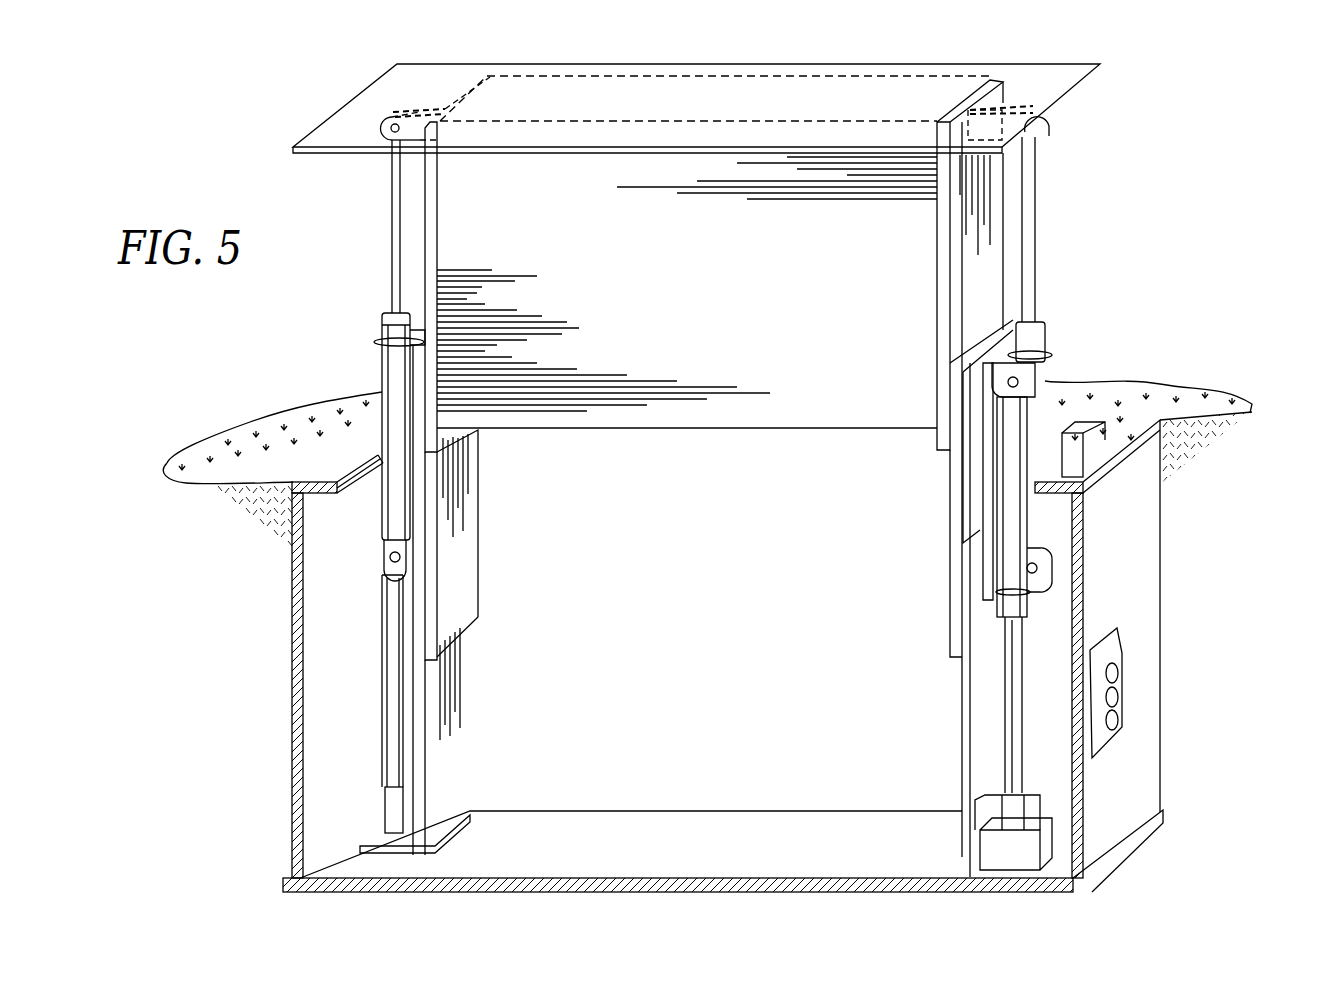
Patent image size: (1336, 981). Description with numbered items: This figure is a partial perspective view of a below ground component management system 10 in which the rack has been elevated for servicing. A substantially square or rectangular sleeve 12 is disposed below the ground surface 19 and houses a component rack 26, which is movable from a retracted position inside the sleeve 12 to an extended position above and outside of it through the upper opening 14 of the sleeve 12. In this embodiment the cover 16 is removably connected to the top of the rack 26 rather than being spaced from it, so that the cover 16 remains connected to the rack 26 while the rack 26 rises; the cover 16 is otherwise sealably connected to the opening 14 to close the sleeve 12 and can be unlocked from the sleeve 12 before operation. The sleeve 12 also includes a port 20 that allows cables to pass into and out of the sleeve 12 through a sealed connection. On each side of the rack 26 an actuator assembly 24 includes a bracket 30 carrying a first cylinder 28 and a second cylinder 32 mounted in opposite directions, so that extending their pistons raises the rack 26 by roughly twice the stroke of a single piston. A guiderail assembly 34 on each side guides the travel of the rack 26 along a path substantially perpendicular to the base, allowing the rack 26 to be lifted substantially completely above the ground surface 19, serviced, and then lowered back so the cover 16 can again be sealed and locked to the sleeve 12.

The component management system 10 is at (1213, 516).
The sleeve 12 is at (1147, 560).
The upper opening 14 is at (363, 462).
The cover 16 is at (682, 107).
The ground surface 19 is at (196, 465).
The port 20 is at (1122, 672).
The actuator assembly 24 is at (358, 376).
The component rack 26 is at (682, 302).
The first cylinder 28 is at (1020, 604).
The bracket 30 is at (395, 355).
The second cylinder 32 is at (393, 518).
The guiderail assembly 34 is at (470, 632).